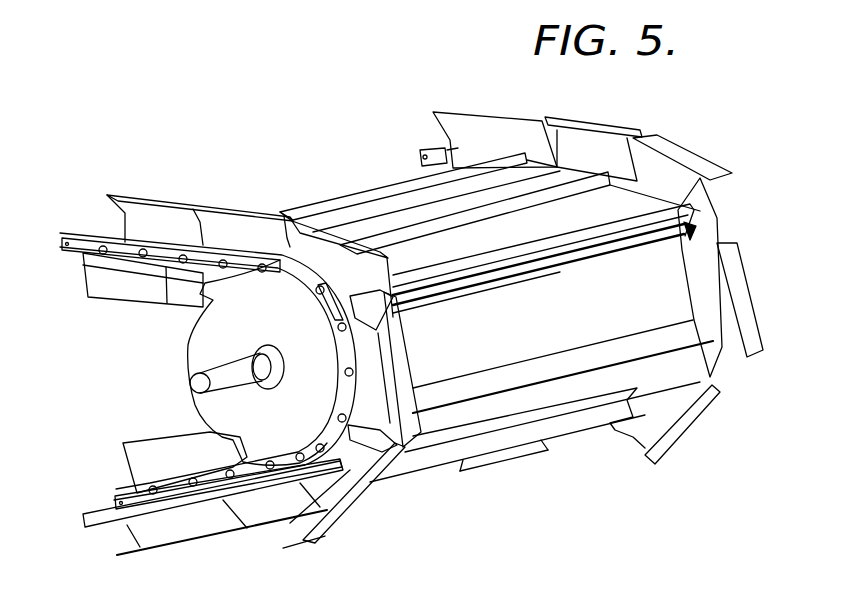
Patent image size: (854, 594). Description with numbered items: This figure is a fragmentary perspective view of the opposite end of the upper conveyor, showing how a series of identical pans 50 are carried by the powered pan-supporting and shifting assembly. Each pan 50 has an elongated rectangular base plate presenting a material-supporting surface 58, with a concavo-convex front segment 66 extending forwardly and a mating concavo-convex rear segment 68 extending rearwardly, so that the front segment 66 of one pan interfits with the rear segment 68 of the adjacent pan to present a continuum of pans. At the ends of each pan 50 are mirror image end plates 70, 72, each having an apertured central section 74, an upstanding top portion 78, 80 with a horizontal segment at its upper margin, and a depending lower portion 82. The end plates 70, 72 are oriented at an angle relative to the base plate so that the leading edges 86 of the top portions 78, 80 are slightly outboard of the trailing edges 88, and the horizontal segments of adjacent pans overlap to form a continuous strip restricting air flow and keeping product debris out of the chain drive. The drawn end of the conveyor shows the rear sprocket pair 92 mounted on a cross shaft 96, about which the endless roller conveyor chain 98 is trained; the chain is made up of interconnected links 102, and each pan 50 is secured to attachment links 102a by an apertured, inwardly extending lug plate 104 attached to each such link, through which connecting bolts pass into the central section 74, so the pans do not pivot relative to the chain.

The pan 50 is at (383, 182).
The material-supporting surface 58 is at (501, 317).
The concavo-convex front segment 66 is at (580, 265).
The concavo-convex rear segment 68 is at (657, 345).
The end plate 70 is at (162, 186).
The end plate 72 is at (540, 110).
The apertured central section 74 is at (367, 373).
The upstanding top portion 78 is at (125, 213).
The upstanding top portion 80 is at (470, 128).
The depending lower portion 82 is at (97, 285).
The leading edge 86 is at (337, 505).
The trailing edge 88 is at (327, 500).
The rear sprocket pair 92 is at (186, 352).
The cross shaft 96 is at (195, 389).
The endless roller conveyor chain 98 is at (127, 495).
The link 102 is at (337, 403).
The attachment link 102a is at (327, 340).
The lug plate 104 is at (357, 337).